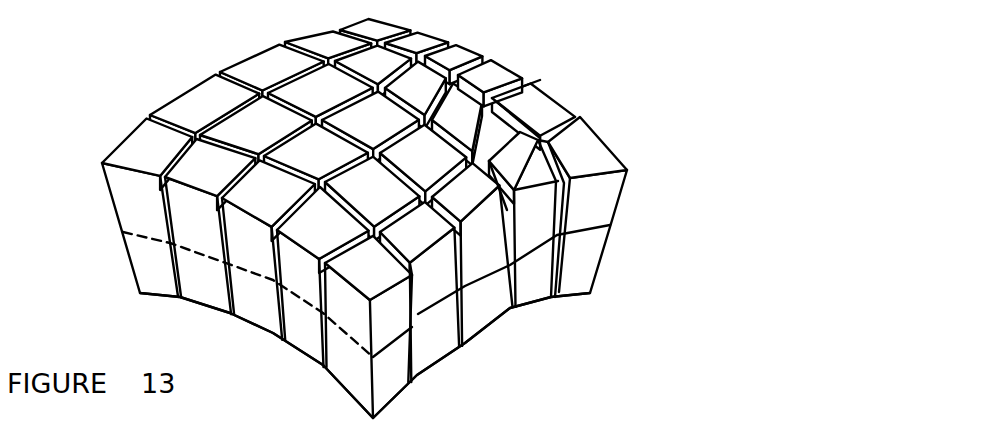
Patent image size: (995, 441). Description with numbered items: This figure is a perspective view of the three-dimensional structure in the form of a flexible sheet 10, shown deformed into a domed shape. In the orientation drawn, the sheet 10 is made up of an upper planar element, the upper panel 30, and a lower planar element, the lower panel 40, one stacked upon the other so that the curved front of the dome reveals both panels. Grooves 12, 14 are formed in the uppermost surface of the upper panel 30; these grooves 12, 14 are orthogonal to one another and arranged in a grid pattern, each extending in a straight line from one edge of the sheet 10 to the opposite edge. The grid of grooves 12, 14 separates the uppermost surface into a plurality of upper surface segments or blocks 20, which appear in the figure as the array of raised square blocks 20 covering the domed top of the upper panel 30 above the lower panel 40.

The flexible sheet 10 is at (422, 214).
The groove 12 is at (508, 74).
The groove 14 is at (530, 117).
The upper surface segments or blocks 20 is at (470, 66).
The upper panel 30 is at (630, 200).
The lower panel 40 is at (612, 263).